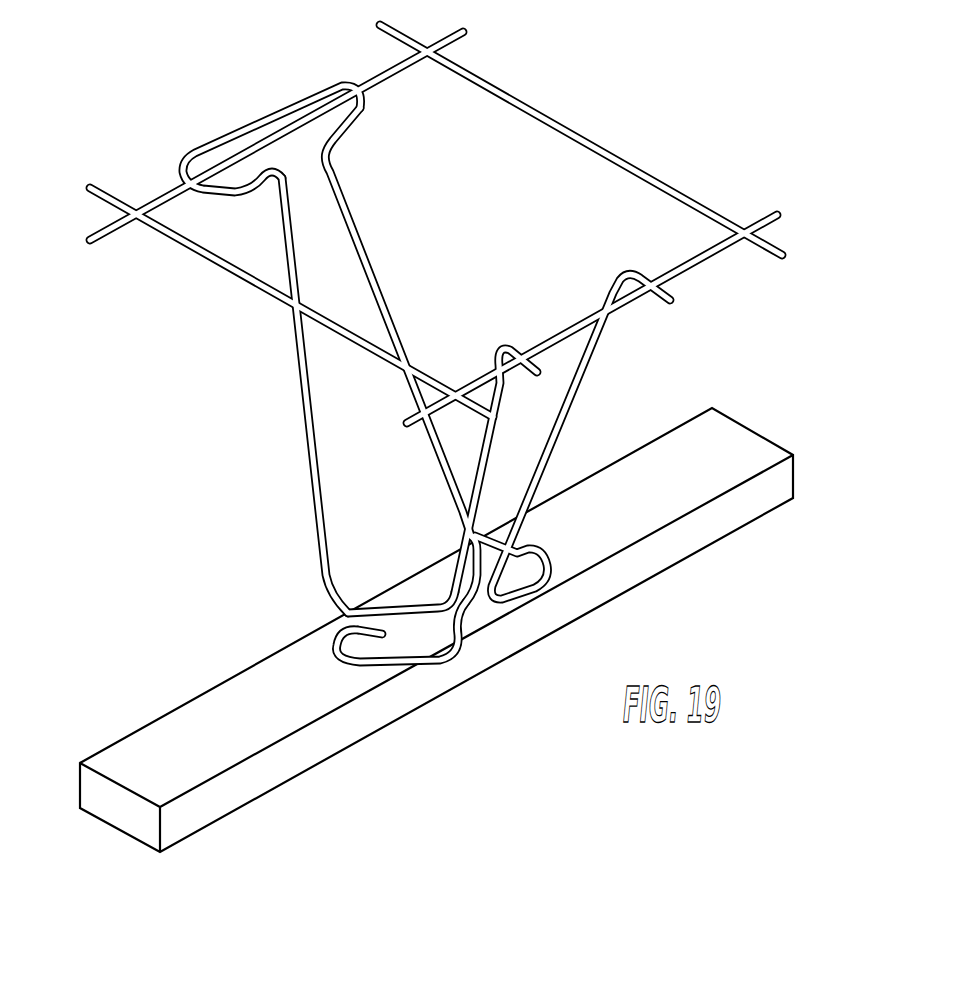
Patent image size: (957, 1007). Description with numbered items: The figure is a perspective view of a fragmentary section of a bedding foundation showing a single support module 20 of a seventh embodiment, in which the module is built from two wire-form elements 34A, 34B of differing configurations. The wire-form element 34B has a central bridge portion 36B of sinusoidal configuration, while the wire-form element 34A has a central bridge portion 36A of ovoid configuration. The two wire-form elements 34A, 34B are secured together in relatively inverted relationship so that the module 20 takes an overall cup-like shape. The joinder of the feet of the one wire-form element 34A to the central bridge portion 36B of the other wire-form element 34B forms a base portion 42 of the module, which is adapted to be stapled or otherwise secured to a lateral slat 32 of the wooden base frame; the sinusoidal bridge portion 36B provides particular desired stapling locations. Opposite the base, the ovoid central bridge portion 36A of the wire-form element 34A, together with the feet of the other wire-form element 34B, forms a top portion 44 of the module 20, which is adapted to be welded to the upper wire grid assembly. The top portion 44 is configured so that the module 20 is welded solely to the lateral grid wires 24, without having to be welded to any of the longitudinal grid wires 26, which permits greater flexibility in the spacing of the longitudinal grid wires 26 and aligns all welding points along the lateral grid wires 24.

The support module 20 is at (420, 395).
The lateral grid wire 24 is at (697, 260).
The longitudinal grid wire 26 is at (647, 177).
The lateral slat 32 is at (700, 493).
The wire-form element 34A is at (286, 400).
The wire-form element 34B is at (604, 398).
The central bridge portion 36A is at (215, 147).
The central bridge portion 36B is at (390, 655).
The base portion 42 is at (322, 615).
The top portion 44 is at (404, 144).